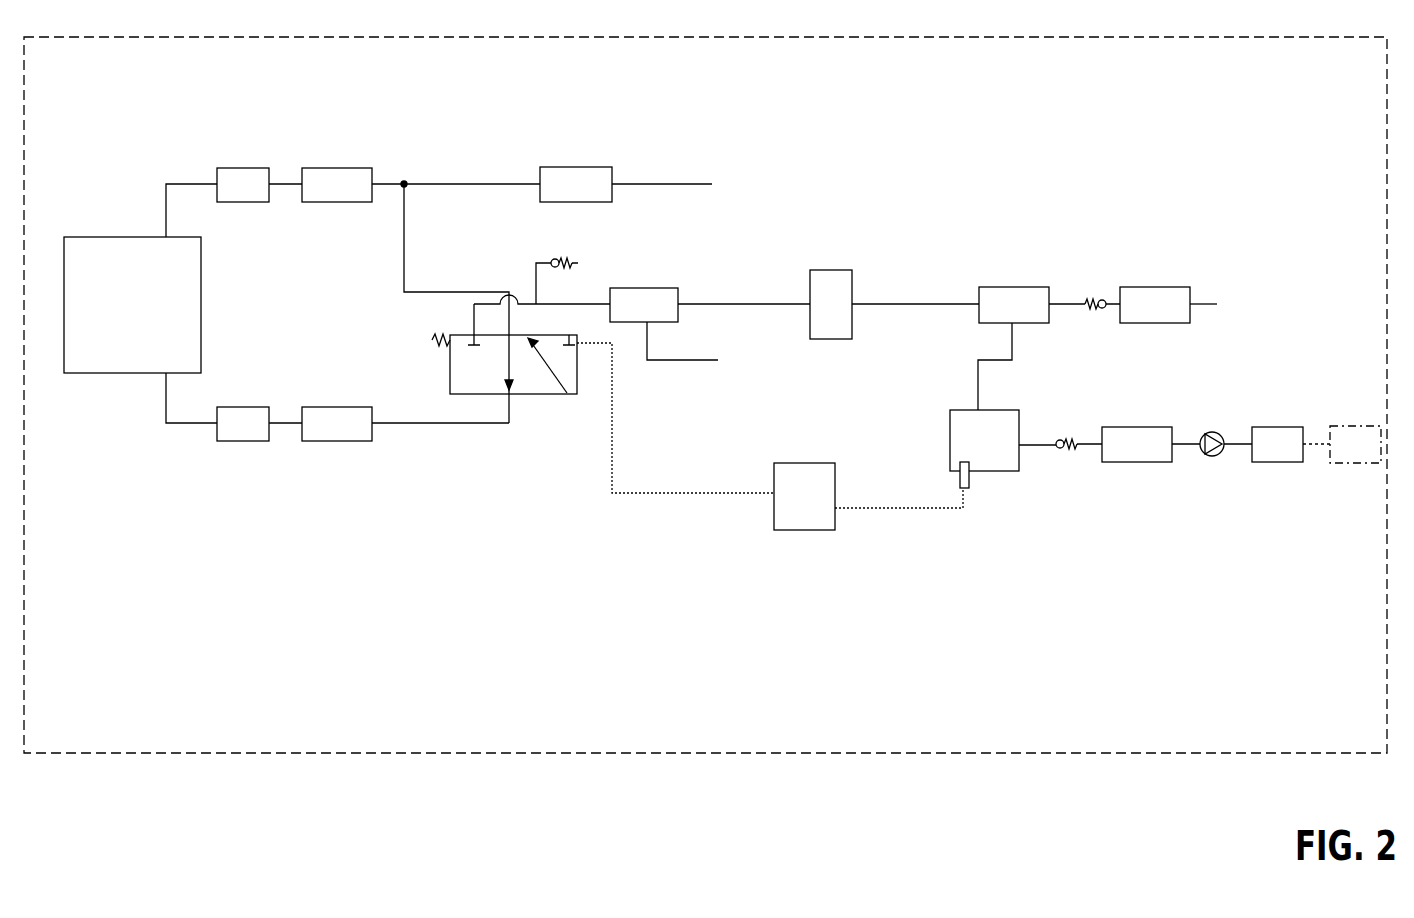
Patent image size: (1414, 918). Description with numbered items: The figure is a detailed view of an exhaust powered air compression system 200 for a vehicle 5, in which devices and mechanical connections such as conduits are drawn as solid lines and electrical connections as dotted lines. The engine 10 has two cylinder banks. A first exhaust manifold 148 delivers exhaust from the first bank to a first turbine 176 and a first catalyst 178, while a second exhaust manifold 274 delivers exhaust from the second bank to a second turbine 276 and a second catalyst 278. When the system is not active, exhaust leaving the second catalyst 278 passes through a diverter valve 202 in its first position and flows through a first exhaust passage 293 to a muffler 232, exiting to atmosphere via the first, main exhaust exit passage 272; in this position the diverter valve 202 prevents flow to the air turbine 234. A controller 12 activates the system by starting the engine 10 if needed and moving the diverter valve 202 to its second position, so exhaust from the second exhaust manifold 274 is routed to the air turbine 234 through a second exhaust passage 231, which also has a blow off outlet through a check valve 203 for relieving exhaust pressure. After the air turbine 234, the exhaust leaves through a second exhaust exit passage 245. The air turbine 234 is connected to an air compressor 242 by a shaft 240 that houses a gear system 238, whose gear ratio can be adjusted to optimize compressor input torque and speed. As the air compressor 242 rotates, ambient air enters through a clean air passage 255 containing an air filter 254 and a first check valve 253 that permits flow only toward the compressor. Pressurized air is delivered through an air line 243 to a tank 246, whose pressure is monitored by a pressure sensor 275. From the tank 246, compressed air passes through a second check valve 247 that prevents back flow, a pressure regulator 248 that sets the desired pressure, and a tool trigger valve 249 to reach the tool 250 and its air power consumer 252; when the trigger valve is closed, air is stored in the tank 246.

The vehicle 5 is at (717, 37).
The air compression system 200 is at (1044, 170).
The engine 10 is at (132, 305).
The controller 12 is at (770, 436).
The first exhaust manifold 148 is at (166, 217).
The first turbine 176 is at (243, 185).
The first catalyst 178 is at (336, 185).
The second exhaust manifold 274 is at (166, 384).
The second turbine 276 is at (243, 424).
The second catalyst 278 is at (389, 424).
The first exhaust passage 293 is at (404, 288).
The muffler 232 is at (508, 184).
The first, main exhaust exit passage 272 is at (630, 184).
The check valve 203 is at (553, 259).
The second exhaust passage 231 is at (543, 304).
The diverter valve 202 is at (573, 335).
The air turbine 234 is at (644, 305).
The second exhaust exit passage 245 is at (647, 361).
The shaft 240 is at (739, 304).
The gear system 238 is at (894, 304).
The air compressor 242 is at (1032, 305).
The air line 243 is at (1012, 355).
The tank 246 is at (1003, 440).
The pressure sensor 275 is at (968, 490).
The first check valve 253 is at (1097, 300).
The air filter 254 is at (1155, 305).
The clean air passage 255 is at (1202, 306).
The second check valve 247 is at (1070, 440).
The pressure regulator 248 is at (1137, 444).
The tool trigger valve 249 is at (1212, 432).
The tool 250 is at (1277, 444).
The air power consumer 252 is at (1342, 444).